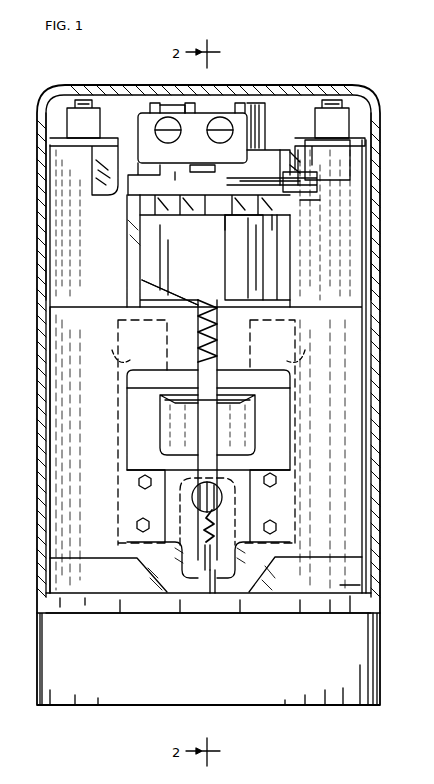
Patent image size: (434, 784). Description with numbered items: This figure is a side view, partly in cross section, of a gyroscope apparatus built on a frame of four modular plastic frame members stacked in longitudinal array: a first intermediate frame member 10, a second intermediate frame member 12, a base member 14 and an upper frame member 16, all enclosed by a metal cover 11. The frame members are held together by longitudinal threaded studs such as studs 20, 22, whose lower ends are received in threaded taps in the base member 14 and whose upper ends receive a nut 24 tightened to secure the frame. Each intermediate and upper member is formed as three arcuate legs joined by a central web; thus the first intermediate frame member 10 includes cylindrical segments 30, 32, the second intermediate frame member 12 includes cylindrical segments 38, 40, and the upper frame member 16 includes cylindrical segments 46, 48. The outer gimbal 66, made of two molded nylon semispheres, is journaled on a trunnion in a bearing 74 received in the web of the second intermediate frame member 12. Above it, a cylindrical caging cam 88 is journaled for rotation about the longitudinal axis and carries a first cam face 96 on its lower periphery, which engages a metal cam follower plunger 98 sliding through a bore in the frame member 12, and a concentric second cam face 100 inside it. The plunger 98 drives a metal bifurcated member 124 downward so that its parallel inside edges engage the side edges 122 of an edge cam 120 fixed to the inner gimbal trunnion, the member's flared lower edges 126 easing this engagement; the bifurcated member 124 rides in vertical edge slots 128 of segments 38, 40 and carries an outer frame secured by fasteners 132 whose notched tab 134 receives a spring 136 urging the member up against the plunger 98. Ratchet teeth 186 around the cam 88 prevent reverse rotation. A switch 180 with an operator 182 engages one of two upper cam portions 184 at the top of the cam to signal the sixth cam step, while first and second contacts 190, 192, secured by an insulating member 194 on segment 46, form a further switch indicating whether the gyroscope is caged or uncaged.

The first intermediate frame member 10 is at (390, 586).
The metal cover 11 is at (316, 88).
The second intermediate frame member 12 is at (362, 425).
The base member 14 is at (390, 650).
The upper frame member 16 is at (390, 203).
The stud 20 is at (336, 105).
The stud 22 is at (83, 105).
The nut 24 is at (64, 128).
The cylindrical segment 30 is at (352, 566).
The cylindrical segment 32 is at (55, 580).
The cylindrical segment 38 is at (345, 380).
The cylindrical segment 40 is at (50, 372).
The cylindrical segment 46 is at (360, 172).
The cylindrical segment 48 is at (46, 195).
The outer gimbal 66 is at (244, 428).
The bearing 74 is at (190, 392).
The caging cam 88 is at (165, 258).
The first cam face 96 is at (165, 285).
The cam follower plunger 98 is at (212, 300).
The second cam face 100 is at (252, 285).
The edge cam 120 is at (248, 512).
The side edges 122 is at (208, 506).
The bifurcated member 124 is at (135, 430).
The lower edges 126 is at (180, 550).
The vertical edge slots 128 is at (197, 432).
The fasteners 132 is at (140, 478).
The tab 134 is at (215, 594).
The spring 136 is at (217, 345).
The switch 180 is at (200, 128).
The operator 182 is at (196, 176).
The upper cam portion 184 is at (247, 175).
The ratchet teeth 186 is at (178, 205).
The first contact 190 is at (232, 190).
The second contact 192 is at (283, 190).
The insulating member 194 is at (320, 185).